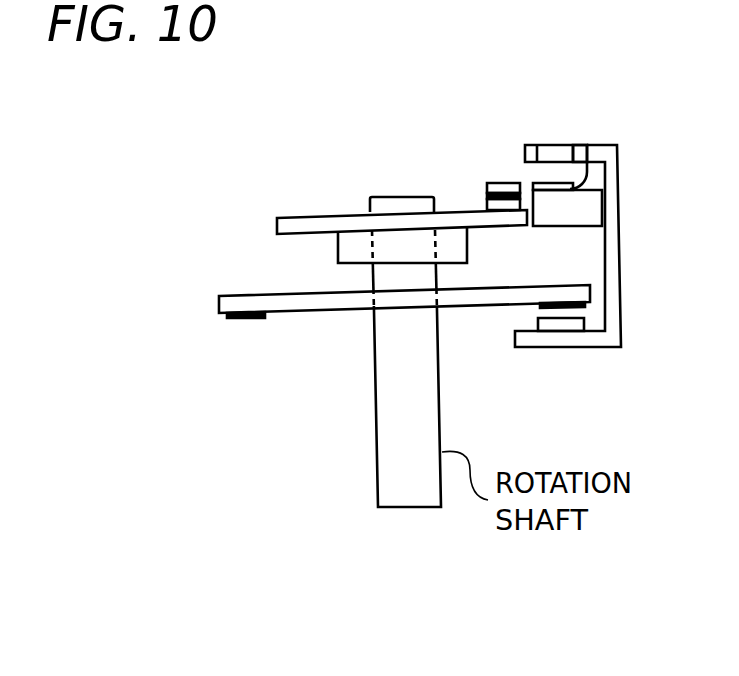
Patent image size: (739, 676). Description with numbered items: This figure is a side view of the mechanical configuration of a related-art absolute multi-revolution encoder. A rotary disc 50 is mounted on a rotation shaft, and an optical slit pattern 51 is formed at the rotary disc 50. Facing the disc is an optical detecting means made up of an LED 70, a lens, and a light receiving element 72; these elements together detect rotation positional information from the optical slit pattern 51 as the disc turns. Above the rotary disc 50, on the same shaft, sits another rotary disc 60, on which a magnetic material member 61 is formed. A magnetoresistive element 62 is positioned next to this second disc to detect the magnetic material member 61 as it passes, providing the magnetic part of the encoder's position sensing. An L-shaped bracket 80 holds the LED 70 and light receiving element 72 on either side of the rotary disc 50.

The rotary disc 50 is at (253, 295).
The optical slit pattern 51 is at (577, 305).
The rotary disc 60 is at (295, 217).
The magnetic material member 61 is at (482, 205).
The magnetoresistive element 62 is at (492, 182).
The LED 70 is at (553, 145).
The light receiving element 72 is at (583, 145).
The L-shaped bracket 80 is at (619, 262).